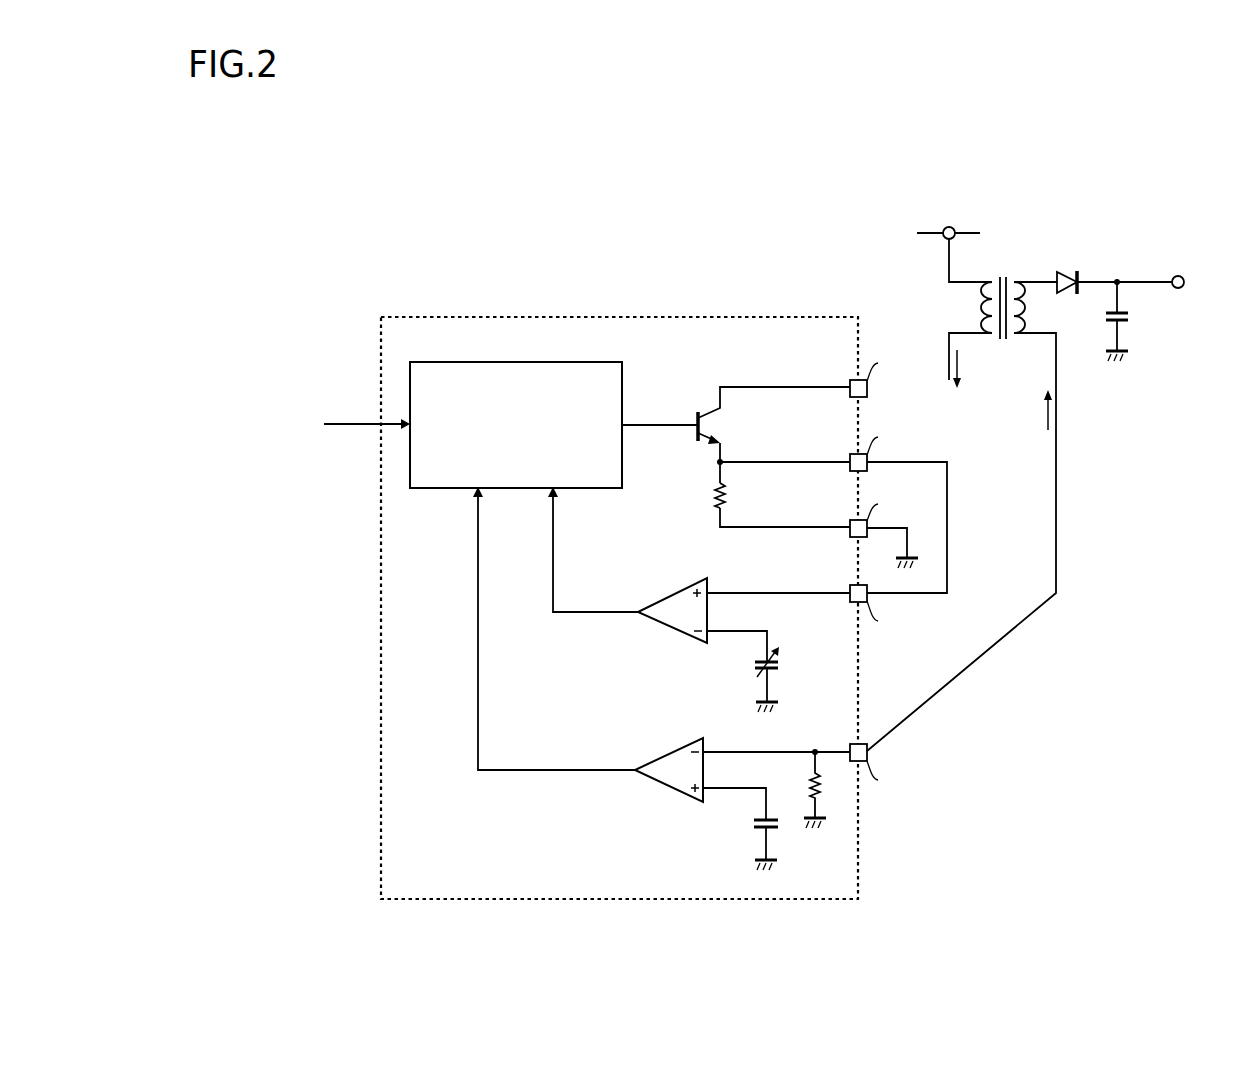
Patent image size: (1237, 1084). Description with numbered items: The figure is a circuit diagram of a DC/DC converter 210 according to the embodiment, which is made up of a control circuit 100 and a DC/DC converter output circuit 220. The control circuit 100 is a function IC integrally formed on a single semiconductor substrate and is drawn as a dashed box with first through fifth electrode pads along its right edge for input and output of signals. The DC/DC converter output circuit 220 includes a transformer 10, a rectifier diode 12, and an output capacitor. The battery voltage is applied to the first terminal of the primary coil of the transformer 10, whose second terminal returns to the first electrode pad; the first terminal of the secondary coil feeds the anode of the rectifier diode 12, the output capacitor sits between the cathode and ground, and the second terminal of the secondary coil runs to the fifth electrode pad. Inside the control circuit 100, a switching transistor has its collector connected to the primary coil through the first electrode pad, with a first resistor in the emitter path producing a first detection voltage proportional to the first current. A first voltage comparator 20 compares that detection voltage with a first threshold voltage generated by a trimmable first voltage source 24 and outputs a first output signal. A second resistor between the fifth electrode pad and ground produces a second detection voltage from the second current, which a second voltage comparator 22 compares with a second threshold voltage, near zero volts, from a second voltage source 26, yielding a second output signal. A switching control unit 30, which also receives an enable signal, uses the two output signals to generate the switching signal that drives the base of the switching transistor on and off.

The transformer 10 is at (1005, 274).
The rectifier diode 12 is at (1068, 273).
The first voltage comparator 20 is at (672, 632).
The second voltage comparator 22 is at (667, 790).
The first voltage source 24 is at (778, 666).
The second voltage source 26 is at (753, 823).
The switching control unit 30 is at (517, 362).
The control circuit 100 is at (742, 317).
The DC/DC converter 210 is at (807, 965).
The DC/DC converter output circuit 220 is at (1205, 198).